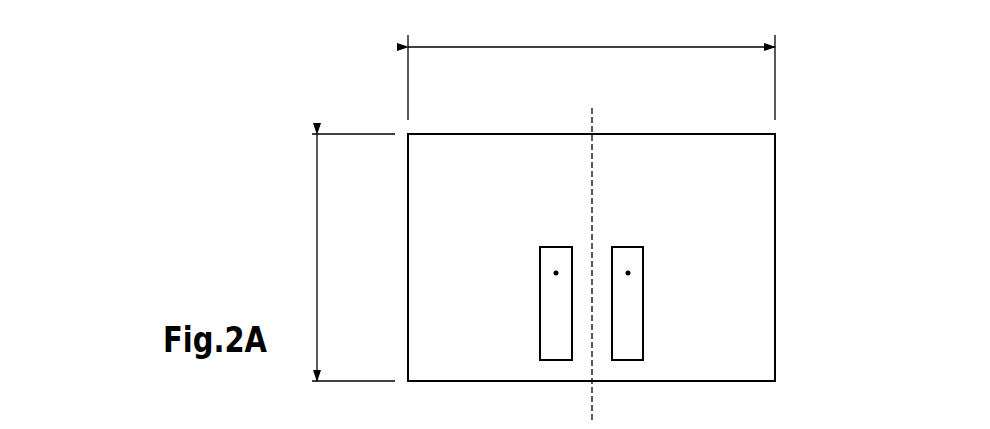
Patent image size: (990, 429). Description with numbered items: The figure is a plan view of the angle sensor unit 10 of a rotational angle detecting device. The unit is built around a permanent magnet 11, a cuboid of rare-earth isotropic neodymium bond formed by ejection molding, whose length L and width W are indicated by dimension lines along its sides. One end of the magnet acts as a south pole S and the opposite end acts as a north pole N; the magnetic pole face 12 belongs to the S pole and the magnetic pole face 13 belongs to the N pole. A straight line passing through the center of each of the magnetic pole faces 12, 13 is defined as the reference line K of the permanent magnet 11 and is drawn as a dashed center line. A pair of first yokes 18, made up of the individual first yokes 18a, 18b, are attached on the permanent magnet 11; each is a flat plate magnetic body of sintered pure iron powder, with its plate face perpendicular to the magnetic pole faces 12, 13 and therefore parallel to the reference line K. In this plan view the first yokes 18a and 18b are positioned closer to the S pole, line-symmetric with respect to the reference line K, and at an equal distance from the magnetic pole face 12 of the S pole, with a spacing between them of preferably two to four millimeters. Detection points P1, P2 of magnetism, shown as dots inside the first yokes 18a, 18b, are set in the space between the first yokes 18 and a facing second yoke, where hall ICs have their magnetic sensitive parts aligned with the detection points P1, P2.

The angle sensor unit 10 is at (838, 147).
The permanent magnet 11 is at (757, 272).
The magnetic pole face of the S pole 12 is at (742, 382).
The magnetic pole face of the N pole 13 is at (458, 133).
The first yokes 18 is at (586, 248).
The first yoke 18a is at (548, 246).
The first yoke 18b is at (633, 273).
The detection point P1 is at (553, 273).
The detection point P2 is at (631, 273).
The reference line K is at (593, 247).
The width W is at (591, 65).
The length L is at (349, 257).
The north pole N is at (725, 150).
The south pole S is at (725, 356).